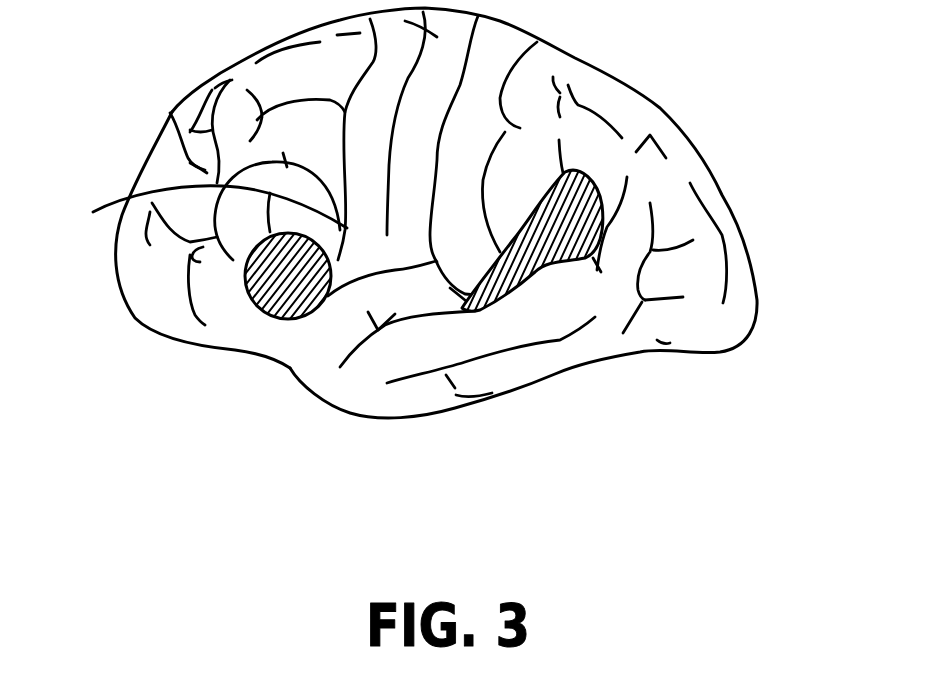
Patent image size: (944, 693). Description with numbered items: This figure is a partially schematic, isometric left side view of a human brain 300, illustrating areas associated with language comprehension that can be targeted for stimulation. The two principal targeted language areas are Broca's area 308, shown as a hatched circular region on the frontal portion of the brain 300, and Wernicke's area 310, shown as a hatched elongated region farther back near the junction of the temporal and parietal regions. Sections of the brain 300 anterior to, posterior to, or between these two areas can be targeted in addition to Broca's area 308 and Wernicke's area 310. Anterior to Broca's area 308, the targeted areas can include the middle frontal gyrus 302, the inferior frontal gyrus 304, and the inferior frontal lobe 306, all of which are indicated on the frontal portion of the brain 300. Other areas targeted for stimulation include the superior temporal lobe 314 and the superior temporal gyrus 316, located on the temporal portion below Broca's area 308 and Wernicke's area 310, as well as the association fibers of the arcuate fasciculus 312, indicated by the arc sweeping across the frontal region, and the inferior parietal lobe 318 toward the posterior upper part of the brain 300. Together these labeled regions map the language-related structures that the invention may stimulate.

The brain 300 is at (726, 109).
The middle frontal gyrus 302 is at (172, 113).
The inferior frontal gyrus 304 is at (118, 285).
The inferior frontal lobe 306 is at (245, 273).
The Broca's area 308 is at (252, 300).
The Wernicke's area 310 is at (557, 262).
The association fibers of the arcuate fasciculus 312 is at (191, 211).
The superior temporal lobe 314 is at (343, 305).
The superior temporal gyrus 316 is at (378, 330).
The inferior parietal lobe 318 is at (598, 174).